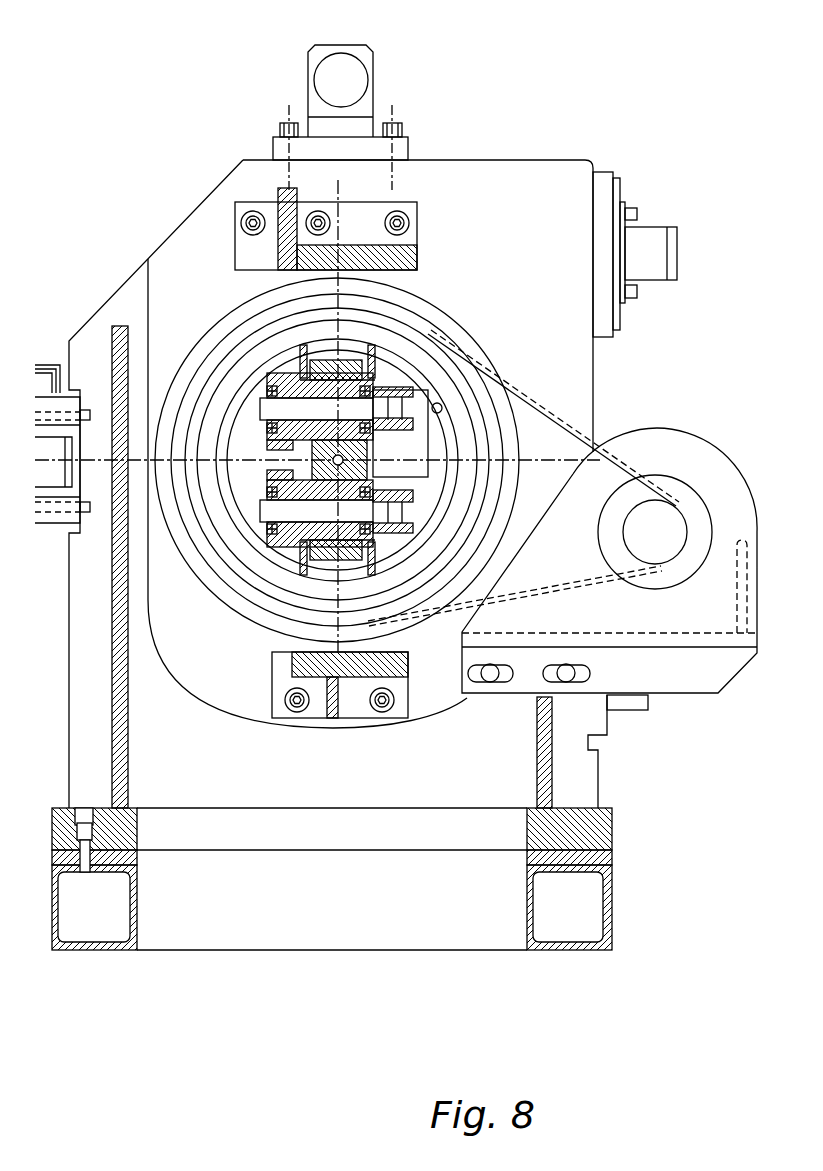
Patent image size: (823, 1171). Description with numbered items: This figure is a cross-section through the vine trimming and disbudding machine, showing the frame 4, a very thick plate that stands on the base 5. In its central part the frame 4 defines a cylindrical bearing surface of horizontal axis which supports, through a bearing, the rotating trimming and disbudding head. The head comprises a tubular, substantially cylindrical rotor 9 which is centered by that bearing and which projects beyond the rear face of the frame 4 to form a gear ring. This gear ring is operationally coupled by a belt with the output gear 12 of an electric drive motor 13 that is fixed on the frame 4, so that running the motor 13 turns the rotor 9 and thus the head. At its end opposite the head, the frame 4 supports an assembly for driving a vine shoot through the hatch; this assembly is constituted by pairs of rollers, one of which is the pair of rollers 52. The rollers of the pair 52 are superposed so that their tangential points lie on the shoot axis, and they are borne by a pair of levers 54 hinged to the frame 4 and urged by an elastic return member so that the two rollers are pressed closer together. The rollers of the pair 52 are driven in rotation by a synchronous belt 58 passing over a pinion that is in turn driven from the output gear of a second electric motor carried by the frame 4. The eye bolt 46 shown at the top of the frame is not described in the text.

The frame 4 is at (496, 176).
The base 5 is at (460, 845).
The rotor 9 is at (458, 375).
The output gear 12 is at (568, 420).
The electric drive motor 13 is at (685, 443).
The eye bolt 46 is at (327, 73).
The pair of rollers 52 is at (327, 568).
The pair of levers 54 is at (403, 385).
The synchronous belt 58 is at (292, 458).